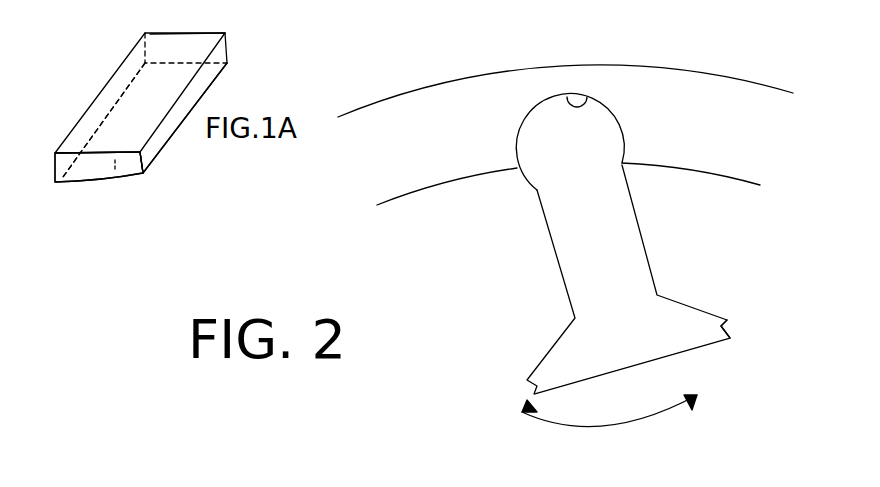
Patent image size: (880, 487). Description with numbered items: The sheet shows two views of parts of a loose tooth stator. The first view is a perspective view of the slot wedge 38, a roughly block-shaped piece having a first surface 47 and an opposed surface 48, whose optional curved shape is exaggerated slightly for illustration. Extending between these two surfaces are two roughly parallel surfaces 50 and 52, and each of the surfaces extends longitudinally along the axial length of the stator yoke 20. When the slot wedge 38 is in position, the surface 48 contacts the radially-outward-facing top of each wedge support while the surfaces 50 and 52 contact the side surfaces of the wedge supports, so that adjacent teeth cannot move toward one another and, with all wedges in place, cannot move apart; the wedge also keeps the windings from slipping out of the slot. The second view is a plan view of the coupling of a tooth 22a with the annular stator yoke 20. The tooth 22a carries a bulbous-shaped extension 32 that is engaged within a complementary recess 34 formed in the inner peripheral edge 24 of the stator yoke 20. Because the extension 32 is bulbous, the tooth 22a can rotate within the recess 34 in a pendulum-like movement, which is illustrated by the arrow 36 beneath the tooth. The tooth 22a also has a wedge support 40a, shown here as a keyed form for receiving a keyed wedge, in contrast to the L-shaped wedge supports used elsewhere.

In FIG. 1A, the slot wedge 38 is at (129, 62).
In FIG. 1A, the first surface 47 is at (192, 38).
In FIG. 1A, the surface 50 is at (98, 107).
In FIG. 1A, the surface 52 is at (157, 147).
In FIG. 1A, the opposed surface 48 is at (117, 177).
In FIG. 2, the stator yoke 20 is at (690, 83).
In FIG. 2, the inner peripheral edge 24 is at (708, 173).
In FIG. 2, the extension 32 is at (552, 150).
In FIG. 2, the recess 34 is at (585, 97).
In FIG. 2, the tooth 22a is at (577, 253).
In FIG. 2, the wedge support 40a is at (729, 320).
In FIG. 2, the arrow 36 is at (670, 413).